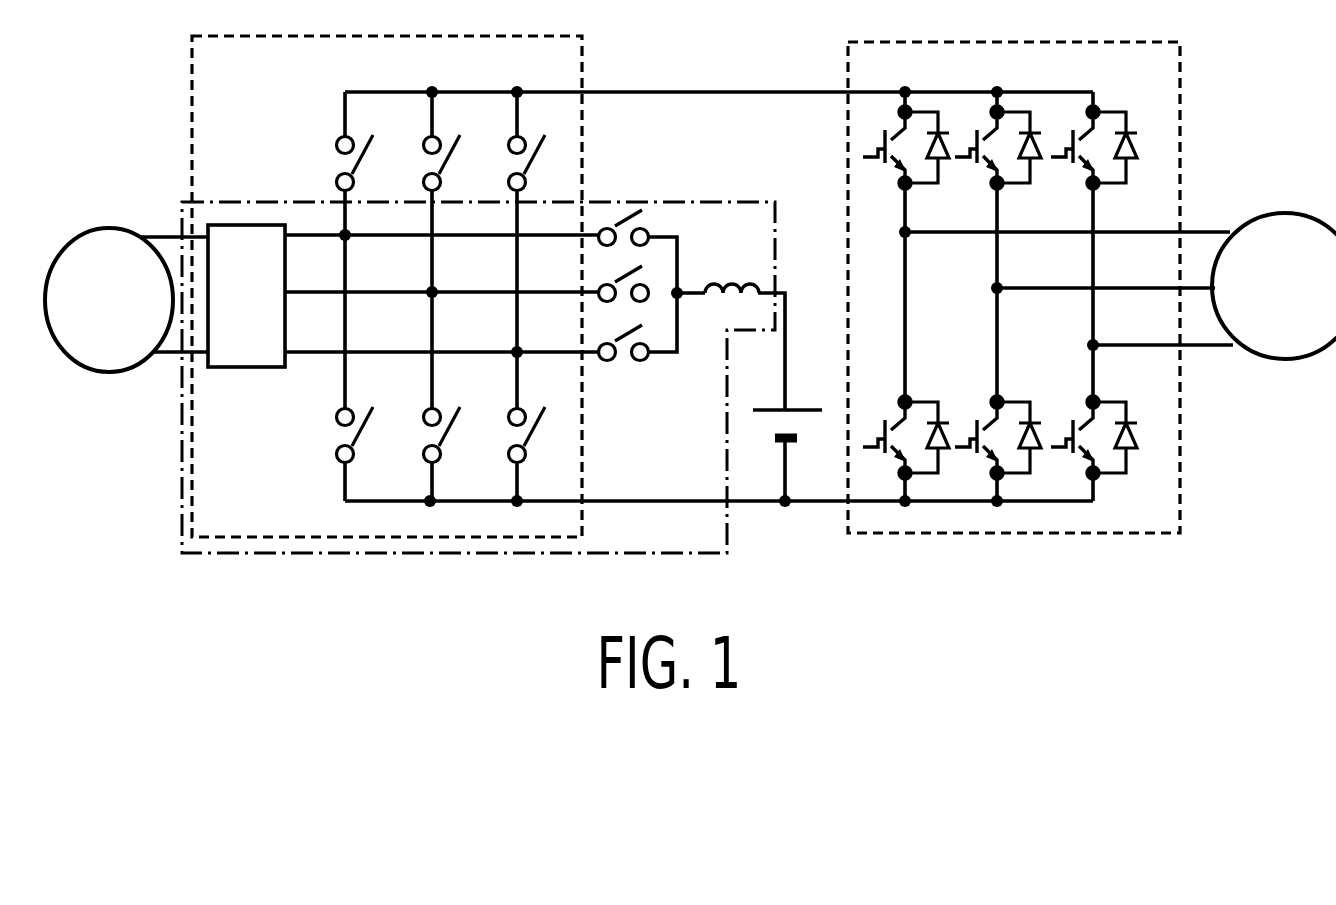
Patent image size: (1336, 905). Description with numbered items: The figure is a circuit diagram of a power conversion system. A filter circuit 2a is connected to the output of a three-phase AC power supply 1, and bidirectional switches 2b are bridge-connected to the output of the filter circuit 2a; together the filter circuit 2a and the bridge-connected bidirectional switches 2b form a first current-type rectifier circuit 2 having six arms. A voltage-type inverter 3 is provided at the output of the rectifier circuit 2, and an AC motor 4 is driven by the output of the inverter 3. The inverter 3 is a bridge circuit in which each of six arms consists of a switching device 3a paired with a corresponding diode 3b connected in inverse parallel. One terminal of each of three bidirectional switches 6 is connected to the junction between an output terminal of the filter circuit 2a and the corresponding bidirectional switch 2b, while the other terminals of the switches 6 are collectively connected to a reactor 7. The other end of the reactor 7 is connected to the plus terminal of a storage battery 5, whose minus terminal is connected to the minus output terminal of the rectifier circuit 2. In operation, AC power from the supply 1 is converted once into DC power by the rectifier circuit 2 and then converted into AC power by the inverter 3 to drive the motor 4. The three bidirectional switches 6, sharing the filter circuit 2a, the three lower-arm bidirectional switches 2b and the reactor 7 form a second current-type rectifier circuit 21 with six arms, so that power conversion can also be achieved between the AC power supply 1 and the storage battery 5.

The three-phase AC power supply 1 is at (109, 300).
The first current-type rectifier circuit 2 is at (387, 286).
The filter circuit 2a is at (246, 296).
The bidirectional switches 2b is at (455, 284).
The voltage-type inverter 3 is at (1014, 287).
The switching devices 3a is at (979, 287).
The diodes 3b is at (1038, 292).
The AC motor 4 is at (1274, 286).
The storage battery 5 is at (782, 401).
The bidirectional switches 6 is at (635, 281).
The reactor 7 is at (732, 264).
The second current-type rectifier circuit 21 is at (448, 377).